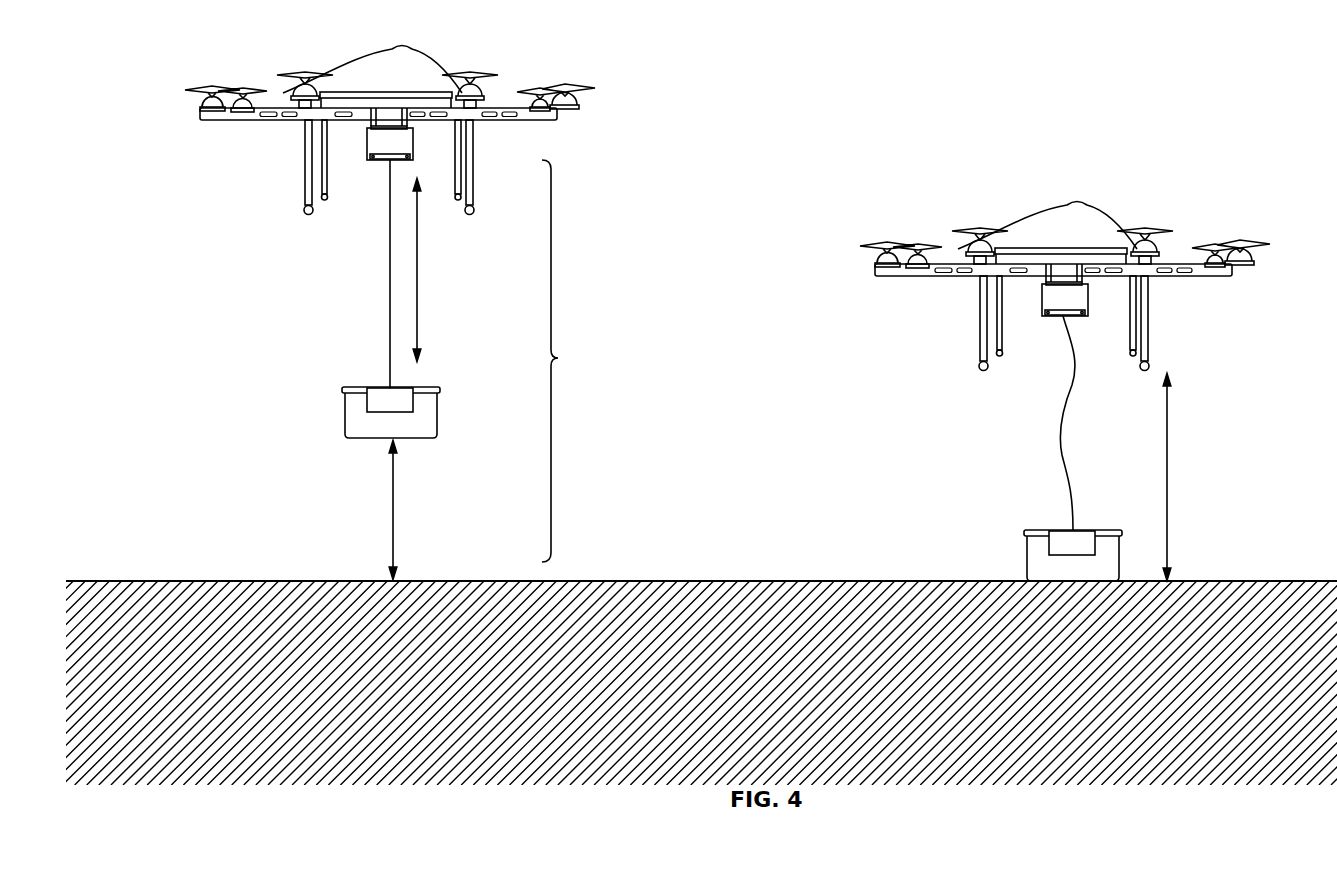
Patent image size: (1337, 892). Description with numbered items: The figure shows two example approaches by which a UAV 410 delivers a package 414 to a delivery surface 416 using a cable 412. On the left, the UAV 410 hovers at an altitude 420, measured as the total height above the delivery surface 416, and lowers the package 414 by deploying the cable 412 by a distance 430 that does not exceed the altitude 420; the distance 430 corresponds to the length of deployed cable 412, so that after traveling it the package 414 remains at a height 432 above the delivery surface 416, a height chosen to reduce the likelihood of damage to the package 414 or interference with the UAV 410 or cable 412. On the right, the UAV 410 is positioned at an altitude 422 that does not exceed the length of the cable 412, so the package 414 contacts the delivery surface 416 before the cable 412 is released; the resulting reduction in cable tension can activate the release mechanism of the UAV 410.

The UAV 410 is at (306, 164).
The cable 412 is at (389, 296).
The package 414 is at (344, 410).
The delivery surface 416 is at (672, 581).
The altitude 420 is at (574, 361).
The altitude 422 is at (1168, 445).
The distance 430 is at (418, 293).
The height 432 is at (394, 496).